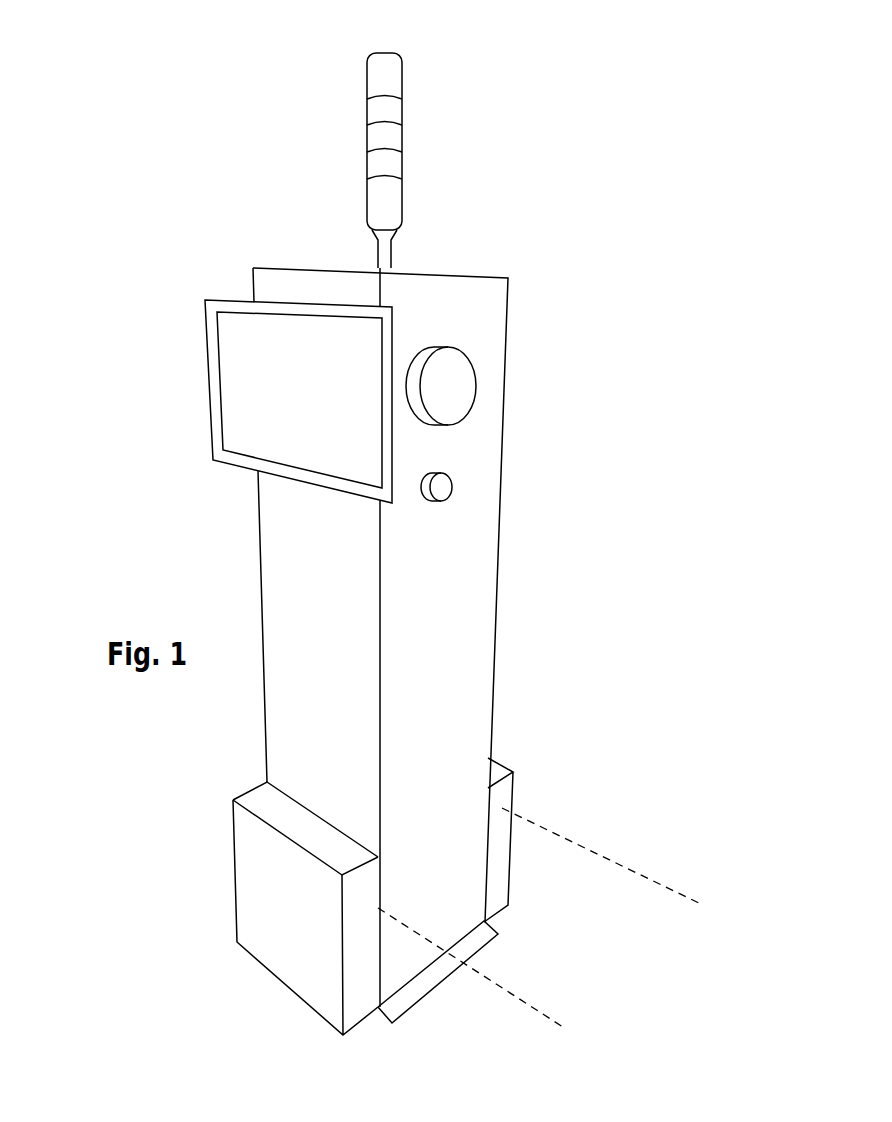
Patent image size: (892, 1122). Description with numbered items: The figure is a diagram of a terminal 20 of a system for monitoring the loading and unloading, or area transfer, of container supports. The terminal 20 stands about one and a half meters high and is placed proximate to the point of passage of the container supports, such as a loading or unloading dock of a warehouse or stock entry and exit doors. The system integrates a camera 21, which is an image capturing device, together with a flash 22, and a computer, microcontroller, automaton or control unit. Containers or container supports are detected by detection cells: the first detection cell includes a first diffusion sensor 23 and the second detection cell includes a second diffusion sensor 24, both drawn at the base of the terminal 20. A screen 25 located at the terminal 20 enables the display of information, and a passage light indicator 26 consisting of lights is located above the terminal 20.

The terminal 20 is at (513, 317).
The camera 21 is at (441, 487).
The flash 22 is at (458, 400).
The first diffusion sensor 23 is at (363, 902).
The second diffusion sensor 24 is at (502, 800).
The screen 25 is at (247, 390).
The passage light indicator 26 is at (408, 136).